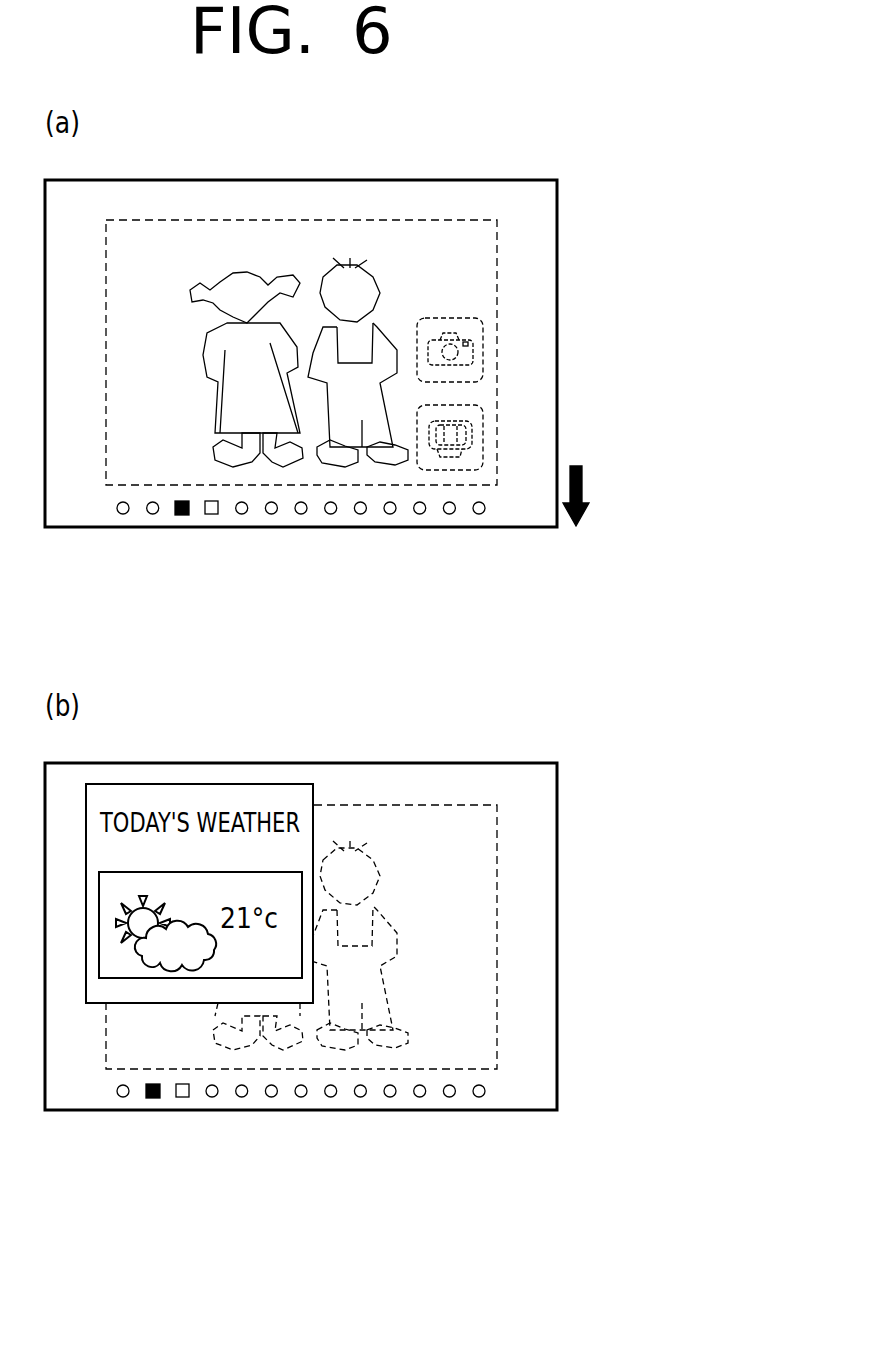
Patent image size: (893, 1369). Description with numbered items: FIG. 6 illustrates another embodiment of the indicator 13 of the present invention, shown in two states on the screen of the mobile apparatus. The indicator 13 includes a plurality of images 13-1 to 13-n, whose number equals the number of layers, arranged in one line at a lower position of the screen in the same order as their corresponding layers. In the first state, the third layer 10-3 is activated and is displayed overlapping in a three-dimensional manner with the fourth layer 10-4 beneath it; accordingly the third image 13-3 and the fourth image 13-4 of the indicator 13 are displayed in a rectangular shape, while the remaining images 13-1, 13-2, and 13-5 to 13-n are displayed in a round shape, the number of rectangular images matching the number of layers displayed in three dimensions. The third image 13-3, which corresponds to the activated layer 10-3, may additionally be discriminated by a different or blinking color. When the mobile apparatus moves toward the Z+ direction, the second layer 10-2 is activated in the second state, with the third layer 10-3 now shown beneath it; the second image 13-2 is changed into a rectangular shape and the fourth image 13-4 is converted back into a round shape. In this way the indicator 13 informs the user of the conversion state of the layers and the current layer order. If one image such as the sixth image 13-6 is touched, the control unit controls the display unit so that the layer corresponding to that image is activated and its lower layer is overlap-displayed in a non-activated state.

The second layer 10-2 is at (523, 763).
The third layer 10-3 is at (523, 180).
The fourth layer 10-4 is at (462, 218).
The indicator 13 is at (512, 598).
The first image 13-1 is at (123, 515).
The second image 13-2 is at (152, 515).
The third image 13-3 is at (182, 516).
The fourth image 13-4 is at (211, 515).
The fifth image 13-5 is at (241, 515).
The sixth image 13-6 is at (271, 515).
The n-th image 13-n is at (479, 515).